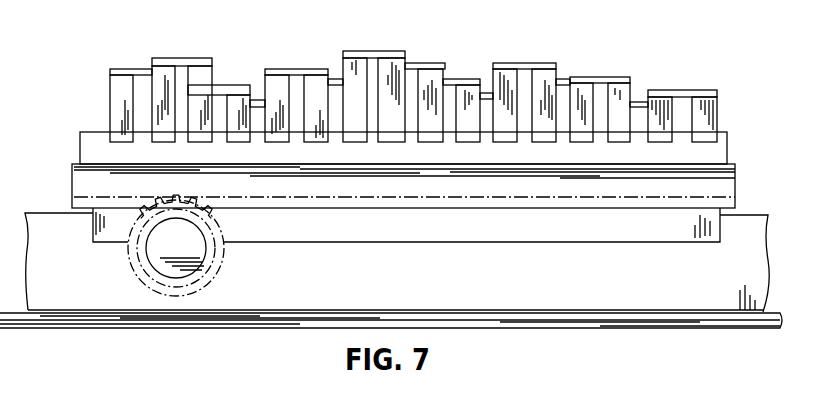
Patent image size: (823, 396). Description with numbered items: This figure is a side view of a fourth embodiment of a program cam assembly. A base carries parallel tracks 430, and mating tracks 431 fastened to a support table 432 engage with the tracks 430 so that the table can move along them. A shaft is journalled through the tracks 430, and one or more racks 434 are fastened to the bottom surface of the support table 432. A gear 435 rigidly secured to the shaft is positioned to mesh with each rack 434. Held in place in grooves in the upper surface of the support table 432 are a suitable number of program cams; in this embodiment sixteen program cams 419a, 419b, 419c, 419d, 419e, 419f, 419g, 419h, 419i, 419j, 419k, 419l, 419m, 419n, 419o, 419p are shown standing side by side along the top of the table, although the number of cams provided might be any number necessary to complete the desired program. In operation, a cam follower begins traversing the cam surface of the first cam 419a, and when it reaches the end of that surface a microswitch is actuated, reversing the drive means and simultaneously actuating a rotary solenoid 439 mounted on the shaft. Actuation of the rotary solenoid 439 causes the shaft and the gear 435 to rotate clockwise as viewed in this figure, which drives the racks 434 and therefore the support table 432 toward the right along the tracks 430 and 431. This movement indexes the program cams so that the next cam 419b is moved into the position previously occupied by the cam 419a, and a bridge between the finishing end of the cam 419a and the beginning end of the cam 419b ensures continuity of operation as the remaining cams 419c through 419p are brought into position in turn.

The program cam 419a is at (703, 115).
The program cam 419b is at (657, 110).
The program cam 419c is at (628, 95).
The program cam 419d is at (578, 98).
The program cam 419e is at (542, 85).
The program cam 419f is at (503, 75).
The program cam 419g is at (467, 92).
The program cam 419h is at (428, 97).
The program cam 419i is at (388, 65).
The program cam 419j is at (352, 75).
The program cam 419k is at (313, 88).
The program cam 419l is at (276, 88).
The program cam 419m is at (235, 100).
The program cam 419n is at (200, 103).
The program cam 419o is at (162, 80).
The program cam 419p is at (123, 82).
The parallel tracks 430 is at (745, 230).
The mating tracks 431 is at (398, 210).
The support table 432 is at (87, 143).
The rack 434 is at (72, 183).
The gear 435 is at (230, 255).
The rotary solenoid 439 is at (205, 275).